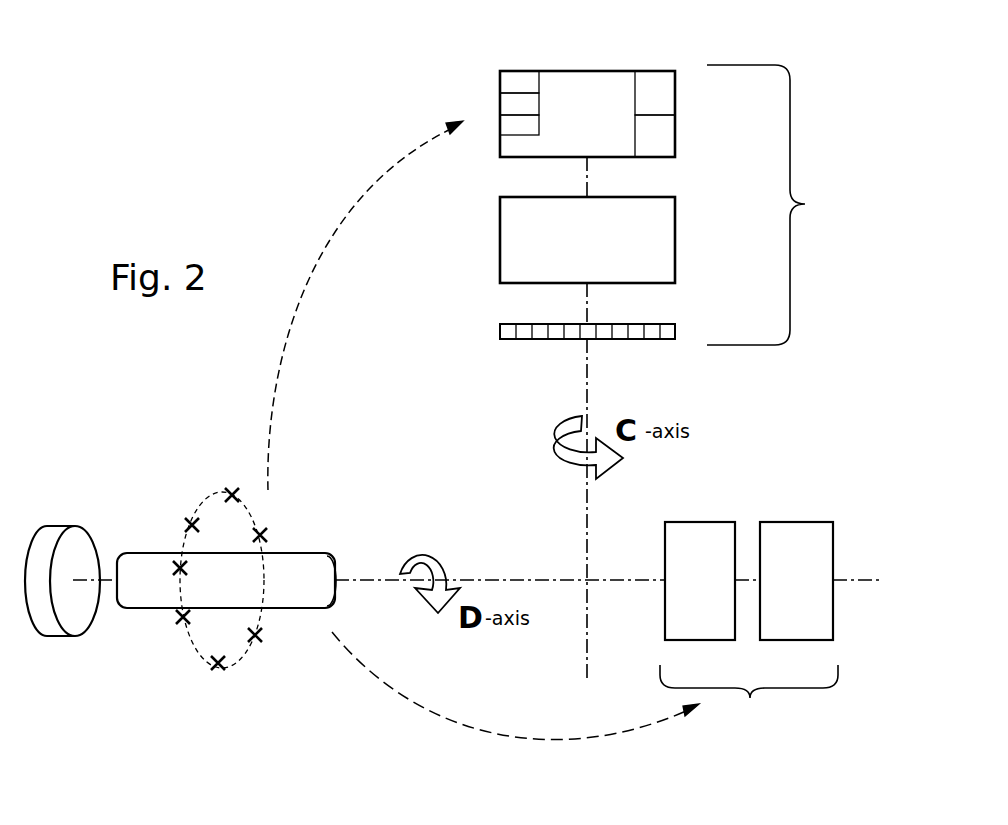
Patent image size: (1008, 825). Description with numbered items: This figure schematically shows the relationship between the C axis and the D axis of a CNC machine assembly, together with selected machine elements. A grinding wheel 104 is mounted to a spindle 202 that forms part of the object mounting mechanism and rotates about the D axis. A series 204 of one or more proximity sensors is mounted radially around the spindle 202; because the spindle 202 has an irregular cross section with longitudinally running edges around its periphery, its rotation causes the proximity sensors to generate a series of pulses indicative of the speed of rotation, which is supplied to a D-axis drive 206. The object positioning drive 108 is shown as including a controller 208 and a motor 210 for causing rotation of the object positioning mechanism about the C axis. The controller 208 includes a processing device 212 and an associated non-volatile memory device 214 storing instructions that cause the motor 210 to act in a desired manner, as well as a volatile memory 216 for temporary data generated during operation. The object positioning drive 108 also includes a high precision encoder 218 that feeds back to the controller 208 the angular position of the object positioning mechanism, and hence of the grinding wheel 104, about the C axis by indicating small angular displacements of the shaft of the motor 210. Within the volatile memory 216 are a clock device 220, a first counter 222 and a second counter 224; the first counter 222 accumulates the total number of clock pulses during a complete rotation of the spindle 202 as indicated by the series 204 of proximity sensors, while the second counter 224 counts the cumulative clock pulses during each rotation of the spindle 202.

The grinding wheel 104 is at (72, 540).
The object positioning drive 108 is at (777, 205).
The spindle 202 is at (148, 560).
The series of proximity sensors 204 is at (232, 492).
The D-axis drive 206 is at (749, 602).
The controller 208 is at (558, 104).
The motor 210 is at (660, 245).
The processing device 212 is at (665, 95).
The non-volatile memory device 214 is at (660, 137).
The volatile memory 216 is at (604, 120).
The encoder 218 is at (667, 325).
The clock device 220 is at (510, 82).
The first counter 222 is at (510, 104).
The second counter 224 is at (510, 126).